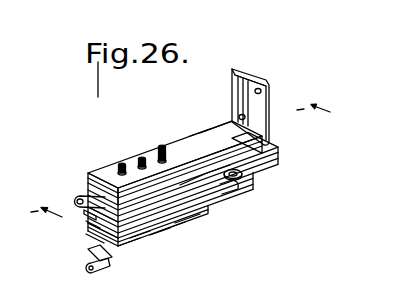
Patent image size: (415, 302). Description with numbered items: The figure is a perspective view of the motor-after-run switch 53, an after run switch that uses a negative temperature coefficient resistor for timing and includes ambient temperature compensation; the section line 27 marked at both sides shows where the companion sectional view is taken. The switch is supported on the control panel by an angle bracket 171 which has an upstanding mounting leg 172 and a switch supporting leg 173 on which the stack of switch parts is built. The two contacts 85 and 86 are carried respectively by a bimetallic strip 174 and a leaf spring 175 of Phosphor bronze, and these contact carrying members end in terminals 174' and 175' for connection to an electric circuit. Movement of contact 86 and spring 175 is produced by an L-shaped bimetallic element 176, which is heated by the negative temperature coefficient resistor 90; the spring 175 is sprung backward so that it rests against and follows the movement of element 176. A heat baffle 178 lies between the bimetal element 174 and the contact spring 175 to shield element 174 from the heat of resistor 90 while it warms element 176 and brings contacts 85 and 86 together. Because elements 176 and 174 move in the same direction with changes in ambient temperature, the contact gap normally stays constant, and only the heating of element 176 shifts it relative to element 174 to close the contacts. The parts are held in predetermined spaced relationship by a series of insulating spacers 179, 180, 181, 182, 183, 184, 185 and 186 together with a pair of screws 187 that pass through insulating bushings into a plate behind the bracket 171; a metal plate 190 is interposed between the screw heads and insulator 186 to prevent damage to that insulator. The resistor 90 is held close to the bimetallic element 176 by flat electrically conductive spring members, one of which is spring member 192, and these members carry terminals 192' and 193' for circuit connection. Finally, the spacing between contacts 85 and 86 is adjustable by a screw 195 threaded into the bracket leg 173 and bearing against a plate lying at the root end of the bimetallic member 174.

The motor-after-run switch 53 is at (122, 147).
The screws 187 is at (137, 144).
The adjusting screw 195 is at (165, 148).
The insulating spacer 179 is at (90, 195).
The insulating spacer 180 is at (98, 200).
The terminal 174' is at (79, 179).
The angle bracket 171 is at (215, 123).
The mounting leg 172 is at (272, 87).
The switch supporting leg 173 is at (200, 133).
The heat baffle 178 is at (207, 173).
The bimetallic strip 174 is at (200, 169).
The contact 85 is at (258, 157).
The leaf spring 175 is at (200, 180).
The L-shaped bimetallic element 176 is at (238, 195).
The contact 86 is at (247, 176).
The spring member 192 is at (180, 205).
The negative temperature coefficient resistor 90 is at (193, 218).
The insulating spacer 184 is at (128, 255).
The insulating spacer 185 is at (137, 241).
The insulator 186 is at (158, 238).
The metal plate 190 is at (170, 241).
The terminal 192' is at (192, 244).
The insulating spacer 181 is at (88, 213).
The insulating spacer 182 is at (90, 223).
The terminal 175' is at (68, 245).
The insulating spacer 183 is at (93, 250).
The terminal 193' is at (76, 270).
The section line 27 is at (179, 150).